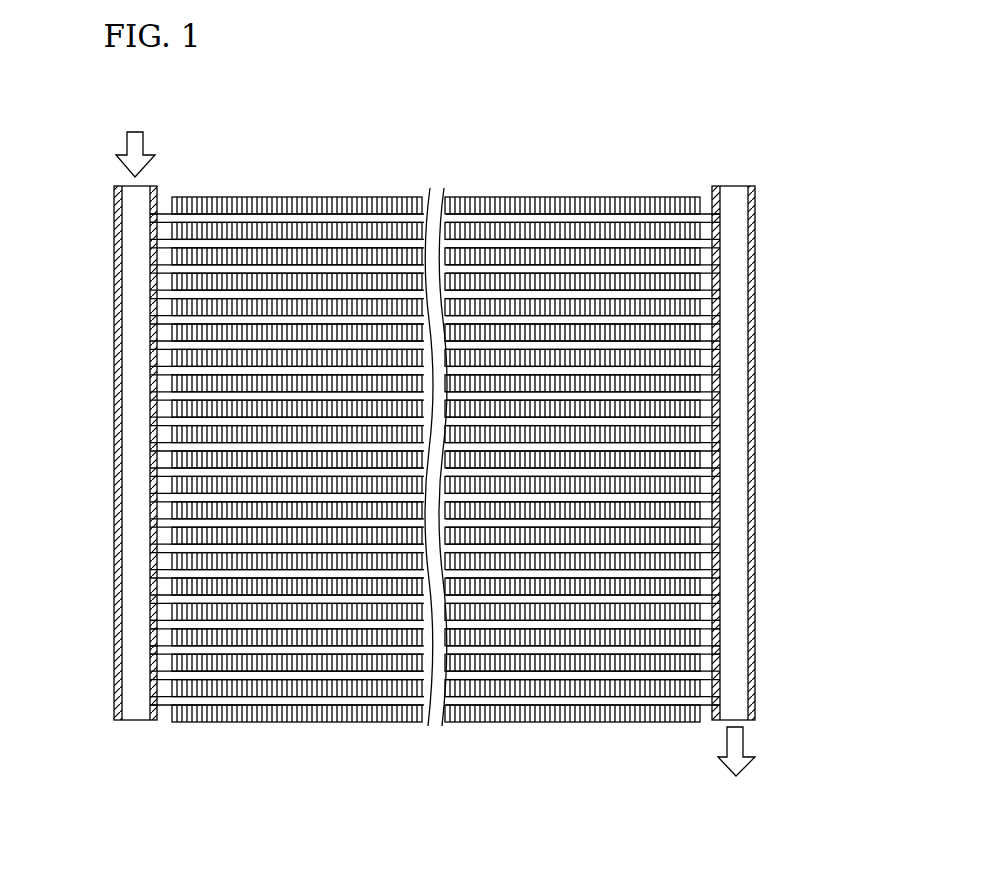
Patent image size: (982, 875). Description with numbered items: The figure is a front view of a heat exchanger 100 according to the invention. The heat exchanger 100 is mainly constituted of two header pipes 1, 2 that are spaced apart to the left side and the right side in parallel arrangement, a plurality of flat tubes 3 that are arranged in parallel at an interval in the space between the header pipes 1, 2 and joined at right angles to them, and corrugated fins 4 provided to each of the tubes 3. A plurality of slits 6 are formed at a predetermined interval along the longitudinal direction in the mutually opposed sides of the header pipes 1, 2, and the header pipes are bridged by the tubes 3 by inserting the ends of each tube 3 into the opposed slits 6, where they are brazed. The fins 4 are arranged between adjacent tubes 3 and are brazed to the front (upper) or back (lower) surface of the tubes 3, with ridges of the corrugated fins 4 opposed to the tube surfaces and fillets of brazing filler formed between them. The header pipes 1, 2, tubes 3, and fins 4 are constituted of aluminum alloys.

The heat exchanger 100 is at (778, 172).
The header pipe 1 is at (137, 316).
The header pipe 2 is at (735, 575).
The flat tube 3 is at (605, 214).
The corrugated fin 4 is at (270, 197).
The slit 6 is at (185, 627).